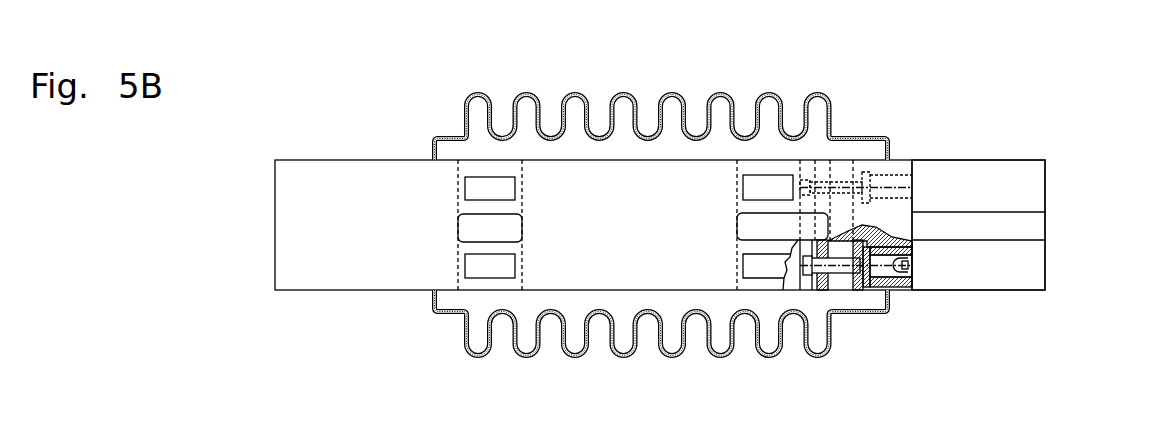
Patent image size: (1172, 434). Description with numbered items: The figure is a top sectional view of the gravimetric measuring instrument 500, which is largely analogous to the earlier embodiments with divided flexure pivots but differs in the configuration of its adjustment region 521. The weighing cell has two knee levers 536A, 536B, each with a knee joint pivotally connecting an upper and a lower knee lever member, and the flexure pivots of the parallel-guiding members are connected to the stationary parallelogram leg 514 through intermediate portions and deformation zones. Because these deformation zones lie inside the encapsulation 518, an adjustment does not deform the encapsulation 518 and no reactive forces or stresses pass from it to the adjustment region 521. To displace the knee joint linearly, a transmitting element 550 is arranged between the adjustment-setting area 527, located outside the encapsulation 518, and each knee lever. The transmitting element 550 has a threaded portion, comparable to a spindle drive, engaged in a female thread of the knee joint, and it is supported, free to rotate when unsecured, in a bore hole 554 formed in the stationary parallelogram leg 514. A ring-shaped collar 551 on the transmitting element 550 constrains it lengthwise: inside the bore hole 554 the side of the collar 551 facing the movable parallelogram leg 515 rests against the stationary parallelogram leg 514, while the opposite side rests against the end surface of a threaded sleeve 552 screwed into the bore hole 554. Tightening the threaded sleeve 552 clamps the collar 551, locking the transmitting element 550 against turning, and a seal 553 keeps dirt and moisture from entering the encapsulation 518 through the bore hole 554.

The gravimetric measuring instrument 500 is at (362, 120).
The stationary parallelogram leg 514 is at (910, 287).
The movable parallelogram leg 515 is at (383, 247).
The encapsulation 518 is at (717, 93).
The adjustment region 521 is at (949, 187).
The adjustment-setting area 527 is at (923, 264).
The knee lever 536A is at (820, 290).
The knee lever 536B is at (827, 168).
The transmitting element 550 is at (893, 288).
The ring-shaped collar 551 is at (867, 290).
The threaded sleeve 552 is at (907, 272).
The seal 553 is at (857, 290).
The bore hole 554 is at (900, 240).